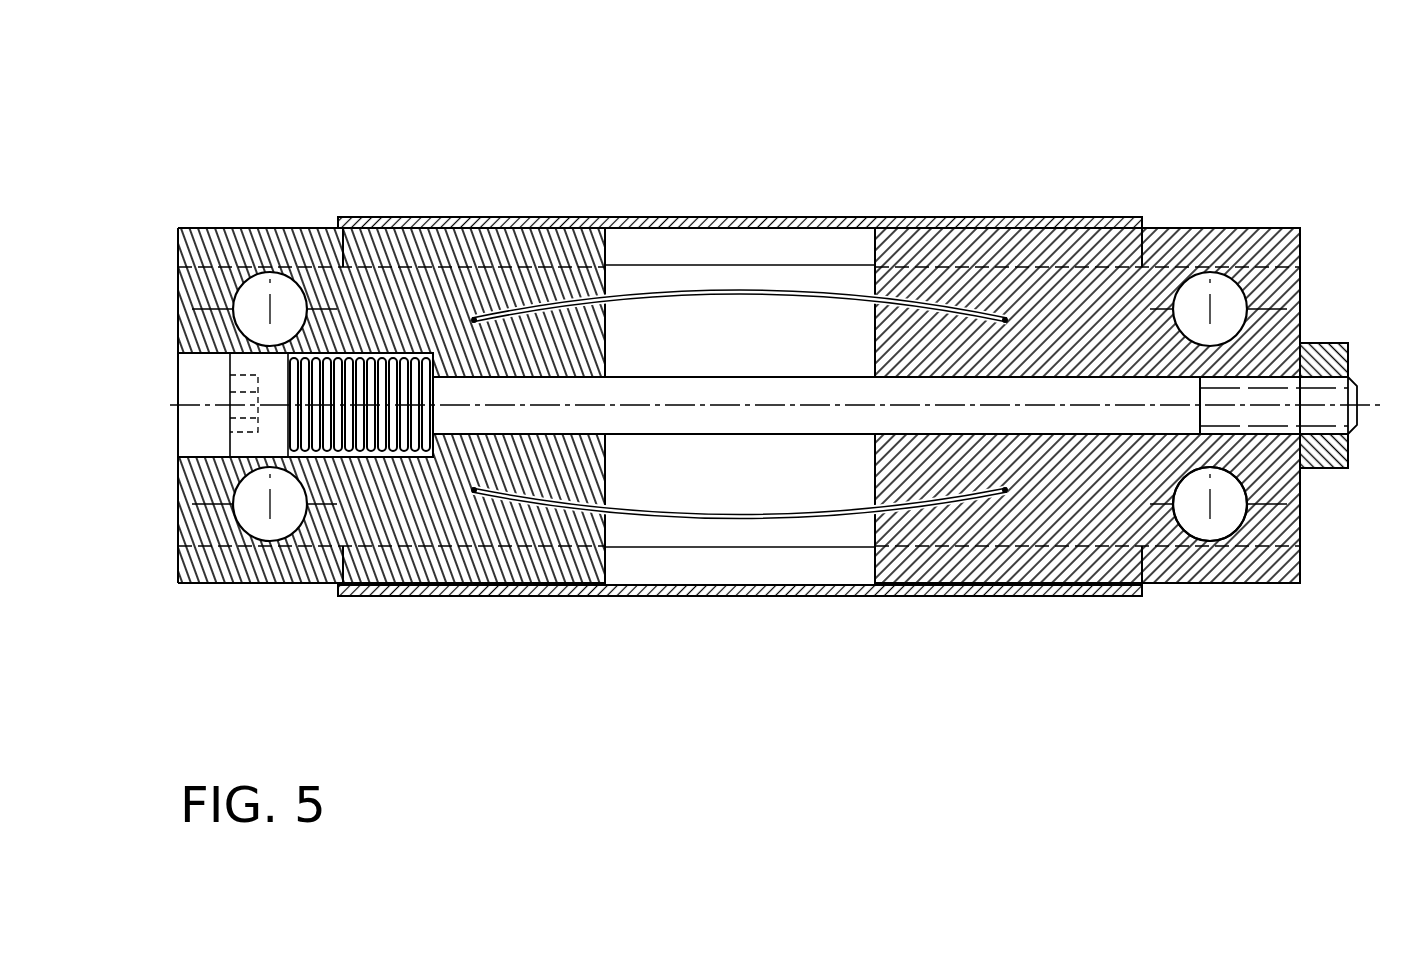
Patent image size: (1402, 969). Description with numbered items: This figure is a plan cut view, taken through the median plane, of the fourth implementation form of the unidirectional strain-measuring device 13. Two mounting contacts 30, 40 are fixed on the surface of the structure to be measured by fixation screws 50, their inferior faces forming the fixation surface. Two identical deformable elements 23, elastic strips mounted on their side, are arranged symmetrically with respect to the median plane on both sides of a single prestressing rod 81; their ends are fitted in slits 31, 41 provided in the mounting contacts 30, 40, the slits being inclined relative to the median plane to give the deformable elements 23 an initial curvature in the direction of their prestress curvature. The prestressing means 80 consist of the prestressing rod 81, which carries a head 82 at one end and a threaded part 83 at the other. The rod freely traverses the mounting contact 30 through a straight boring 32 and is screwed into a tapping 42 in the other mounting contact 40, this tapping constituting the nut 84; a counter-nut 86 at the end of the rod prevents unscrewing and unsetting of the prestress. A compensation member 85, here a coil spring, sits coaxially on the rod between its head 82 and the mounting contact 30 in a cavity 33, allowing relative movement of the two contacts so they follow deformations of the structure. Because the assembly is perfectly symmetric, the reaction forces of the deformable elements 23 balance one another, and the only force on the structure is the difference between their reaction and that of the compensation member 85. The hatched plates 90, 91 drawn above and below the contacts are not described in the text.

The strain-measuring device 13 is at (1078, 160).
The deformable element 23 is at (712, 293).
The mounting contact 30 is at (384, 597).
The slit 31 is at (500, 318).
The straight boring 32 is at (450, 440).
The cavity 33 is at (345, 350).
The mounting contact 40 is at (1090, 512).
The slit 41 is at (943, 312).
The tapping 42 is at (1166, 506).
The fixation screw 50 is at (262, 272).
The prestressing means 80 is at (208, 381).
The prestressing rod 81 is at (665, 423).
The head 82 is at (243, 440).
The threaded part 83 is at (1273, 410).
The nut 84 is at (1302, 272).
The compensation member 85 is at (337, 457).
The counter-nut 86 is at (1349, 343).
The upper plate 90 is at (806, 206).
The lower plate 91 is at (855, 597).